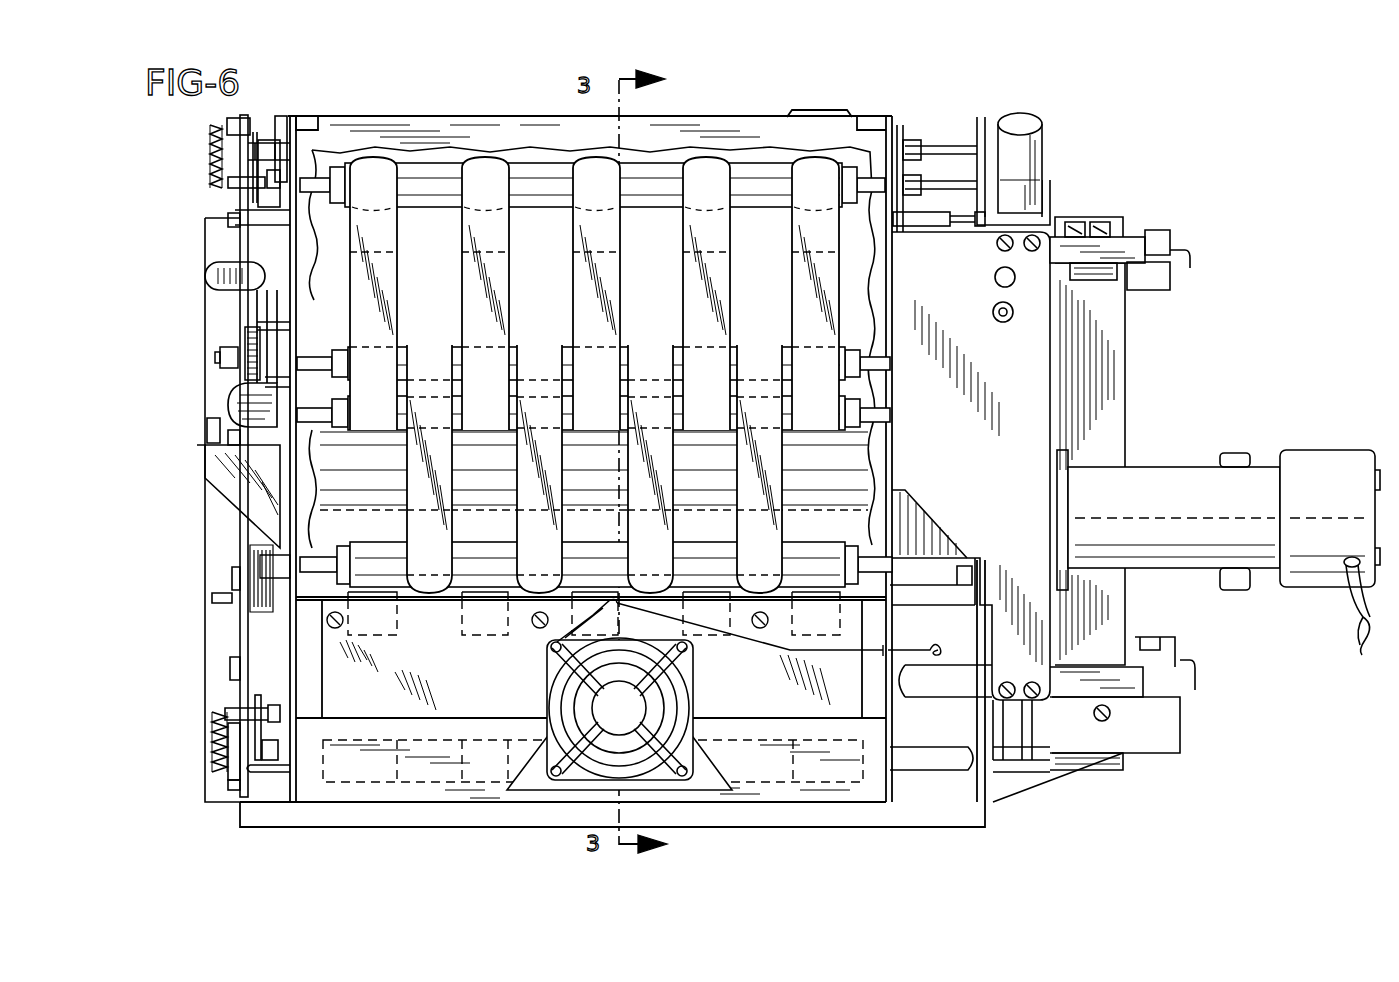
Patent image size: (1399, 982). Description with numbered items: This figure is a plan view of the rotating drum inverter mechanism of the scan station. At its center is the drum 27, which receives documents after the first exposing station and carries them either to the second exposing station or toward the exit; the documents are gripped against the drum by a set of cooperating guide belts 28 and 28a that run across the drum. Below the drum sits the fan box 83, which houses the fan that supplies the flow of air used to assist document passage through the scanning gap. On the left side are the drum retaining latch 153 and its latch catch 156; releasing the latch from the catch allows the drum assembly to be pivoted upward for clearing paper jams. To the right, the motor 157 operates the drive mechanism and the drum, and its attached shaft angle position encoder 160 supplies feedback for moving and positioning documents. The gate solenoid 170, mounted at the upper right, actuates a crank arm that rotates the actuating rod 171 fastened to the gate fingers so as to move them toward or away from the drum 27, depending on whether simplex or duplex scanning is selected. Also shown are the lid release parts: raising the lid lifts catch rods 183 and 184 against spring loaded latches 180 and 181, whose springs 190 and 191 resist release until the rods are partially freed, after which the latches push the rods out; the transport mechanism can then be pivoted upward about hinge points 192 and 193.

The drum 27 is at (428, 283).
The guide belt 28 is at (468, 315).
The guide belt 28a is at (526, 472).
The fan box 83 is at (548, 678).
The drum retaining latch 153 is at (215, 280).
The latch catch 156 is at (248, 330).
The motor 157 is at (1170, 470).
The shaft angle position encoder 160 is at (1320, 452).
The gate solenoid 170 is at (1048, 152).
The actuating rod 171 is at (936, 222).
The spring loaded latch 180 is at (258, 125).
The spring loaded latch 181 is at (266, 795).
The catch rod 183 is at (278, 142).
The catch rod 184 is at (272, 730).
The spring 190 is at (212, 148).
The spring 191 is at (212, 745).
The hinge point 192 is at (1167, 238).
The hinge point 193 is at (1172, 645).